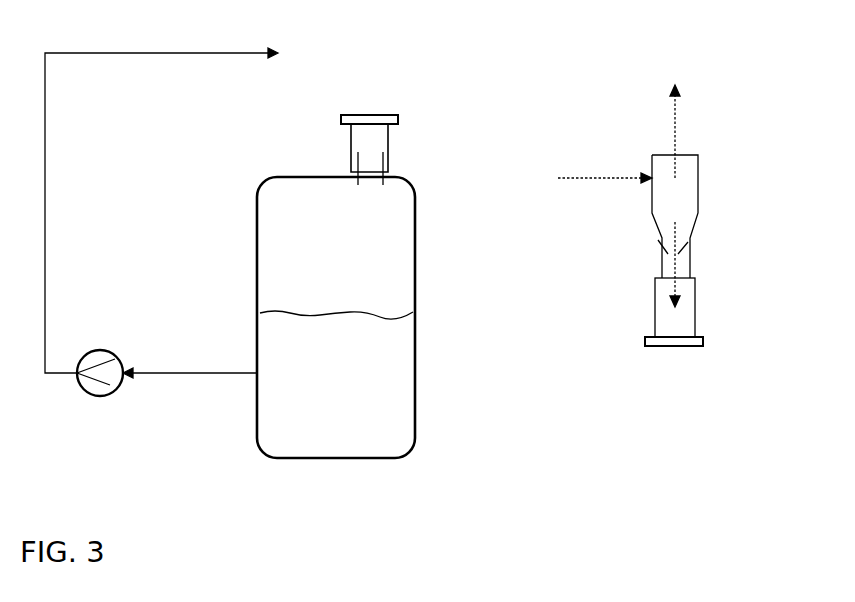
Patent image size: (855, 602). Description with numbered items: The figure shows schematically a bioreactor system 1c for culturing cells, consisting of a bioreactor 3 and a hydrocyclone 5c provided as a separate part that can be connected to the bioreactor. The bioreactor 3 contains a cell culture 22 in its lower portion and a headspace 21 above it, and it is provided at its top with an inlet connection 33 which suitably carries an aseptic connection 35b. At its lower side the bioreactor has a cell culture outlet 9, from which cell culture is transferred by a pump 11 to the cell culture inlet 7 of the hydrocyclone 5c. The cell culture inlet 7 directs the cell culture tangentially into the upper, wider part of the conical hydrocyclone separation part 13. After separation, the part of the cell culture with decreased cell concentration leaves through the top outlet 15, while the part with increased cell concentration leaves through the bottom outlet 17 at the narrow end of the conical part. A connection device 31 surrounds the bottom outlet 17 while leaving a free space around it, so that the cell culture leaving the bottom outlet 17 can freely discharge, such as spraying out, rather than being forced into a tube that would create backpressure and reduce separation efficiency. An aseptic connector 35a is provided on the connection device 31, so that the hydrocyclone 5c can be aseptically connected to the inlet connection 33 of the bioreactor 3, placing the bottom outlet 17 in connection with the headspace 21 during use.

The bioreactor system 1c is at (493, 107).
The bioreactor 3 is at (257, 268).
The headspace 21 is at (346, 270).
The cell culture 22 is at (365, 388).
The aseptic connection 35b is at (388, 150).
The inlet connection 33 is at (368, 180).
The pump 11 is at (102, 397).
The cell culture outlet 9 is at (257, 377).
The hydrocyclone 5c is at (698, 212).
The top outlet 15 is at (670, 155).
The cell culture inlet 7 is at (648, 177).
The hydrocyclone separation part 13 is at (672, 215).
The connection device 31 is at (660, 268).
The bottom outlet 17 is at (678, 254).
The aseptic connector 35a is at (695, 325).